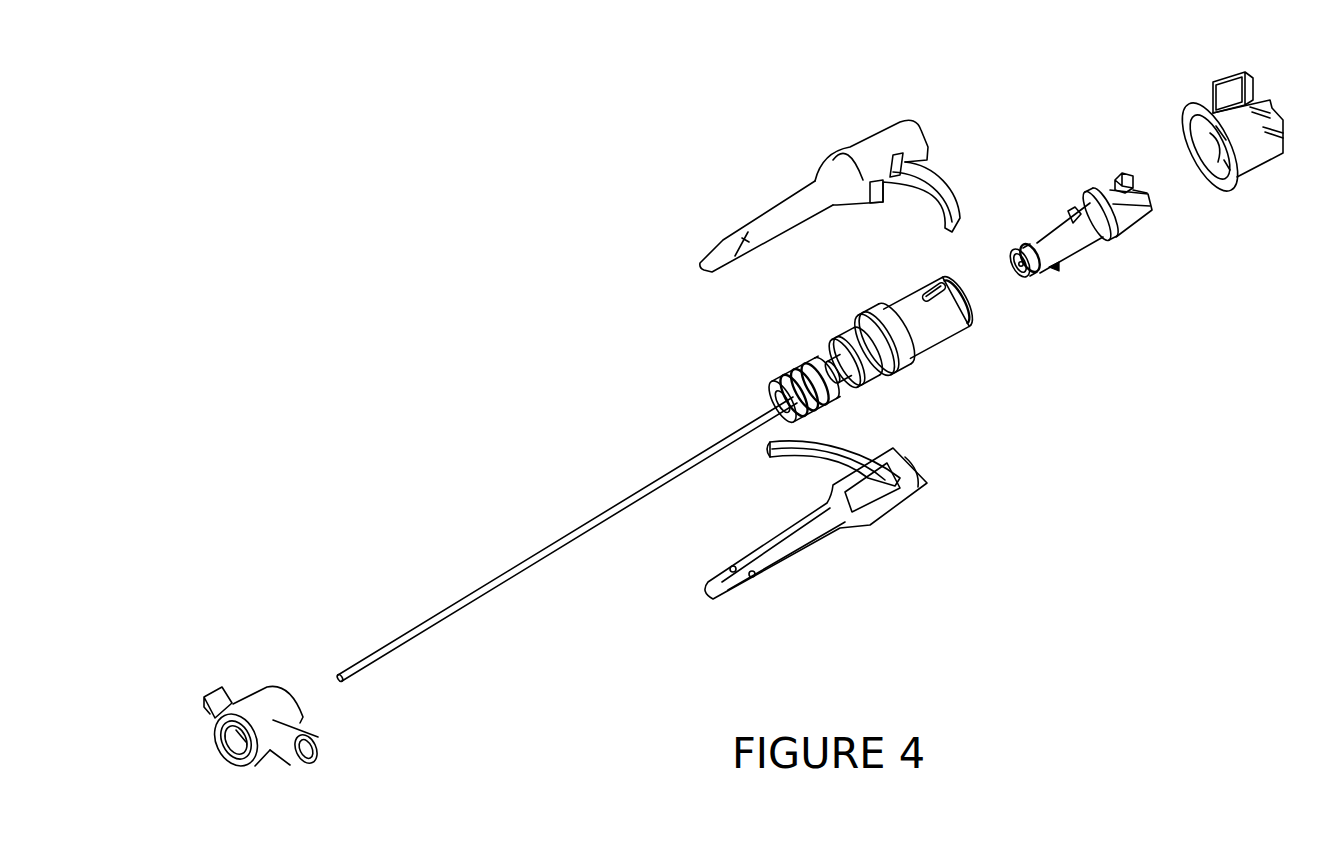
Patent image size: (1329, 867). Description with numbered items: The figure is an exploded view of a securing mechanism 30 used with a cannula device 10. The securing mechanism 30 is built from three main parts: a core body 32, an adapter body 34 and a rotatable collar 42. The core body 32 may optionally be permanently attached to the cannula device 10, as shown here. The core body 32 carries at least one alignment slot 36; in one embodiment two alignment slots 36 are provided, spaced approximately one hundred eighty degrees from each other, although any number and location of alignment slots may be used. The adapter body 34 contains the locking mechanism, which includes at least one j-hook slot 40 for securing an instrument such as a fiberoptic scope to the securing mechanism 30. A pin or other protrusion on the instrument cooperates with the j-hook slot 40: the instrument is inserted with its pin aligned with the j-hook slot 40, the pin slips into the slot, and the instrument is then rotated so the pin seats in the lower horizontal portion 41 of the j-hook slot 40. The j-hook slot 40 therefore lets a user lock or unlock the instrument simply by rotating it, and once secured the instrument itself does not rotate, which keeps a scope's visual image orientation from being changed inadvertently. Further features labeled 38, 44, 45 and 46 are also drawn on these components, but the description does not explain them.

The cannula device 10 is at (693, 628).
The securing mechanism 30 is at (1122, 358).
The core body 32 is at (937, 343).
The adapter body 34 is at (1127, 218).
The alignment slot 36 is at (927, 290).
The tab 38 is at (1070, 208).
The j-hook slot 40 is at (1147, 195).
The lower horizontal portion 41 is at (1120, 190).
The rotatable collar 42 is at (1237, 177).
The opening 44 is at (1217, 173).
The tab 45 is at (1217, 103).
The needle bore 46 is at (1019, 266).